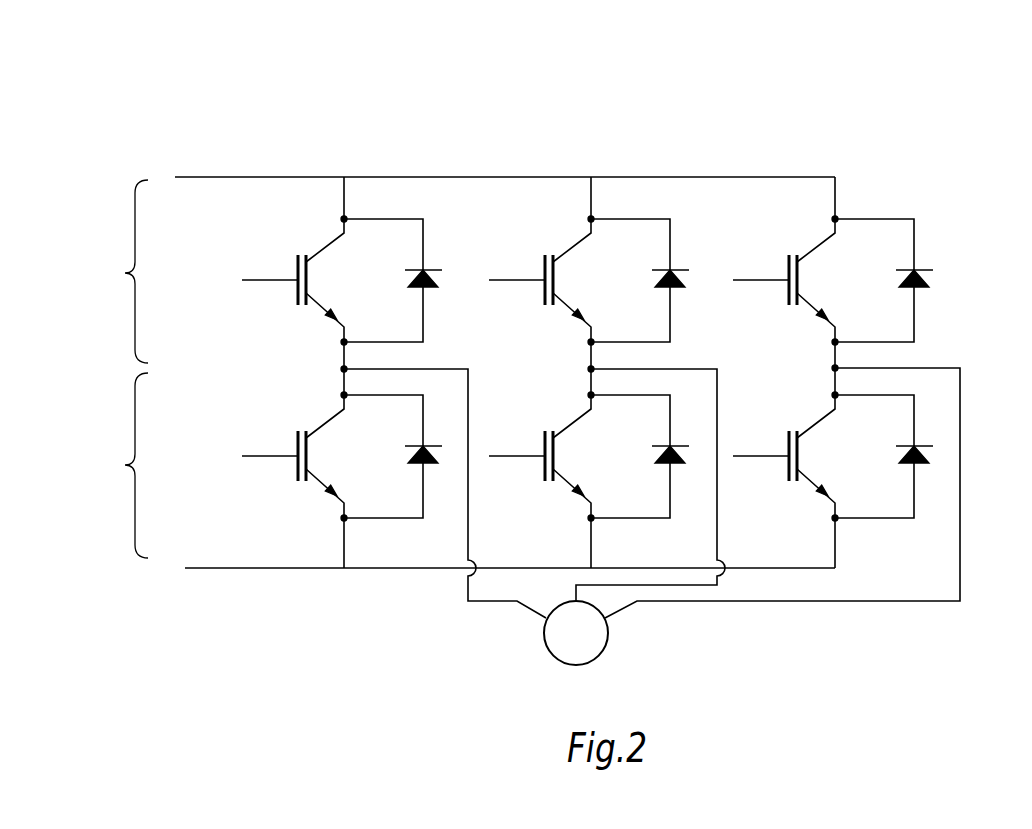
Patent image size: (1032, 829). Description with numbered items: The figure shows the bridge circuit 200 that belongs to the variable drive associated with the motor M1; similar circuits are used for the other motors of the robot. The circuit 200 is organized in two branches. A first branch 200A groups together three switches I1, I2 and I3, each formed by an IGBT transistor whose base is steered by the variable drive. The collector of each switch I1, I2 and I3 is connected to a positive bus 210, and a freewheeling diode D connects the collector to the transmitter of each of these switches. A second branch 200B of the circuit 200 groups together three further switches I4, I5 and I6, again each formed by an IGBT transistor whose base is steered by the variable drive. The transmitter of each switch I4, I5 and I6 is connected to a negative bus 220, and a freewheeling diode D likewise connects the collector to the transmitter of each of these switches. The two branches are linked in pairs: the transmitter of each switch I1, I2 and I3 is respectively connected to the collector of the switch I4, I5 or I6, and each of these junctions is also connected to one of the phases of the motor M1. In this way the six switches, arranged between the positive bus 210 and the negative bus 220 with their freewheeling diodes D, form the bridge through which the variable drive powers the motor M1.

The bridge circuit 200 is at (555, 357).
The positive bus 210 is at (387, 177).
The negative bus 220 is at (378, 569).
The first branch 200A is at (458, 271).
The second branch 200B is at (458, 465).
The switch I1 is at (294, 273).
The switch I2 is at (541, 273).
The switch I3 is at (785, 273).
The switch I4 is at (294, 449).
The switch I5 is at (541, 449).
The switch I6 is at (785, 449).
The freewheeling diode D is at (638, 368).
The motor M1 is at (576, 633).